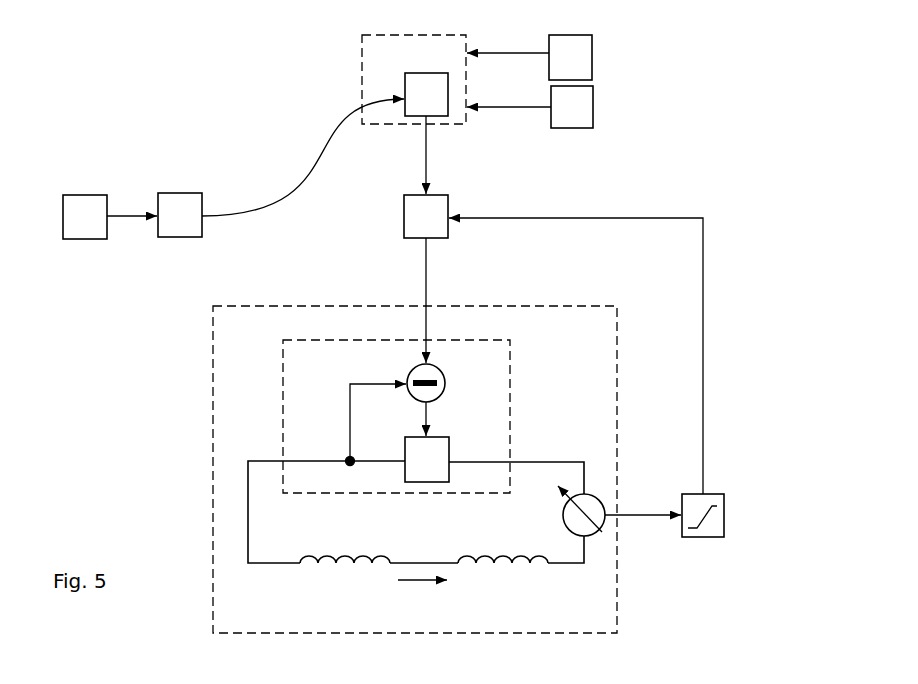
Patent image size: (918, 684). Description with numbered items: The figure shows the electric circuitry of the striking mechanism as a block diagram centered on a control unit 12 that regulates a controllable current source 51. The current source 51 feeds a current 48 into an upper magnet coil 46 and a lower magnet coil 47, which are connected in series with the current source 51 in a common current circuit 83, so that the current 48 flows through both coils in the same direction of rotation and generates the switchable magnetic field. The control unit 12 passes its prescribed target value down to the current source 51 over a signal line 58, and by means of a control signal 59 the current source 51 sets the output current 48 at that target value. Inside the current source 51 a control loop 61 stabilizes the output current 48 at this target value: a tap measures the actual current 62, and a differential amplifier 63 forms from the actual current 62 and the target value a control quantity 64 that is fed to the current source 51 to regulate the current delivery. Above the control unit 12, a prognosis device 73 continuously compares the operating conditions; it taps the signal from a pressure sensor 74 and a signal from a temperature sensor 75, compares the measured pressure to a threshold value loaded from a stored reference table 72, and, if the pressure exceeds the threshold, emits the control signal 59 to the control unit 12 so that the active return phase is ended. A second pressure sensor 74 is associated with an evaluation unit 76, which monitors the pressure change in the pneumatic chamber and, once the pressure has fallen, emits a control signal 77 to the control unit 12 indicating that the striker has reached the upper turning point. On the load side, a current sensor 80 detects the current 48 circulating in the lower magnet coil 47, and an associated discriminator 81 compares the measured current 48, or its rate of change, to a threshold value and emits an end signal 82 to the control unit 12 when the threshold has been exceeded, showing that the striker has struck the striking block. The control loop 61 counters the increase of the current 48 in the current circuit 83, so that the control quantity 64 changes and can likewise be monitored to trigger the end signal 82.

The control unit 12 is at (428, 205).
The upper magnet coil 46 is at (495, 558).
The lower magnet coil 47 is at (345, 555).
The current 48 is at (428, 585).
The current source 51 is at (432, 447).
The control signal 58 is at (425, 277).
The control signal 59 is at (423, 167).
The control loop 61 is at (283, 390).
The actual current 62 is at (348, 397).
The differential amplifier 63 is at (446, 383).
The control quantity 64 is at (430, 425).
The reference table 72 is at (430, 80).
The prognosis device 73 is at (360, 80).
The pressure sensor 74 is at (573, 43).
The temperature sensor 75 is at (575, 95).
The evaluation unit 76 is at (185, 203).
The control signal 77 is at (290, 195).
The current sensor 80 is at (598, 503).
The discriminator 81 is at (722, 513).
The end signal 82 is at (703, 455).
The current circuit 83 is at (213, 402).